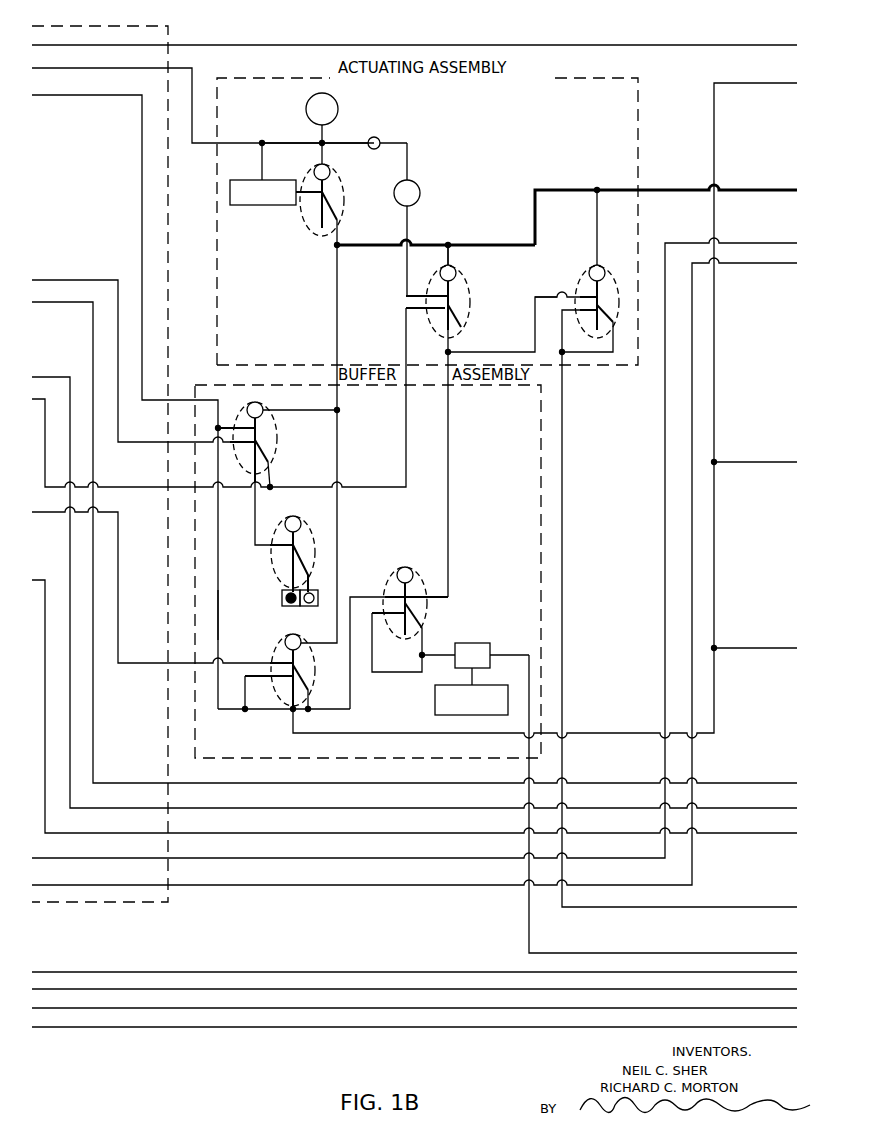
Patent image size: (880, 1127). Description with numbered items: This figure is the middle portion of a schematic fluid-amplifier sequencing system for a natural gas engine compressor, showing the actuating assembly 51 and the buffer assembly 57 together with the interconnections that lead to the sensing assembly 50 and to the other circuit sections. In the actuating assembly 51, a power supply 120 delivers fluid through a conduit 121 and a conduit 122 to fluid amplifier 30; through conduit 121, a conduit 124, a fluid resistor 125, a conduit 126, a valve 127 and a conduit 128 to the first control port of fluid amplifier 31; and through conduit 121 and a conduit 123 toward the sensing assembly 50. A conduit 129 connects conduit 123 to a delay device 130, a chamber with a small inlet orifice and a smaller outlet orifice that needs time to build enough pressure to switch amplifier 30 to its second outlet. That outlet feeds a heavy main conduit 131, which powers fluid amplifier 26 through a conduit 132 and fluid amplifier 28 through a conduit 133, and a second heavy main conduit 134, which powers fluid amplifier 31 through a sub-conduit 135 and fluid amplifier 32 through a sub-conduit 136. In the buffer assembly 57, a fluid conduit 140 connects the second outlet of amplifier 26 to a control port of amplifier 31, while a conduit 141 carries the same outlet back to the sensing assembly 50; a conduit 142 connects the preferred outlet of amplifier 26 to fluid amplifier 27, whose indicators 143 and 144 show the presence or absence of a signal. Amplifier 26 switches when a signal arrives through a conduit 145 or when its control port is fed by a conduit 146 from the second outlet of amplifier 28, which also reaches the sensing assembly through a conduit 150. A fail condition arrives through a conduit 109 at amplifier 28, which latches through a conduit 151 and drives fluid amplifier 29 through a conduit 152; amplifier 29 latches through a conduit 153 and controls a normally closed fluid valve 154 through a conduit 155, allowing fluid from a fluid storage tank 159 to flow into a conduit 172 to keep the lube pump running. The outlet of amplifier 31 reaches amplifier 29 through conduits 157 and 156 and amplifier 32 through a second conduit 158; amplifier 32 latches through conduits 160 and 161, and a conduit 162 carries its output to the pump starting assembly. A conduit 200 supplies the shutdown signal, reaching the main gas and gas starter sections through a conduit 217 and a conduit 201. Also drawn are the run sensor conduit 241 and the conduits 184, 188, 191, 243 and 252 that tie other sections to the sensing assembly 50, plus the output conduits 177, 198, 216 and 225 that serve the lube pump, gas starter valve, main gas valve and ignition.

The sensing assembly 50 is at (168, 30).
The actuating assembly 51 is at (625, 78).
The buffer assembly 57 is at (207, 385).
The conduit 241 is at (402, 45).
The conduit 123 is at (192, 71).
The fluid resistor 125 is at (377, 140).
The power supply 120 is at (339, 99).
The conduit 121 is at (324, 140).
The conduit 122 is at (320, 147).
The conduit 124 is at (331, 151).
The conduit 129 is at (262, 168).
The delay device 130 is at (275, 206).
The fluid amplifier 30 is at (334, 166).
The conduit 126 is at (407, 164).
The valve 127 is at (420, 191).
The conduit 128 is at (407, 218).
The main conduit 134 is at (384, 248).
The sub-conduit 136 is at (597, 212).
The conduit 150 is at (142, 176).
The conduit 145 is at (40, 280).
The conduit 184 is at (393, 783).
The conduit 188 is at (38, 377).
The conduit 141 is at (124, 487).
The fluid conduit 140 is at (363, 487).
The conduit 109 is at (118, 618).
The conduit 191 is at (393, 833).
The fluid conduit 243 is at (400, 858).
The conduit 252 is at (402, 885).
The conduit 177 is at (402, 972).
The conduit 198 is at (402, 989).
The conduit 216 is at (402, 1008).
The conduit 225 is at (402, 1027).
The conduit 172 is at (697, 953).
The conduit 162 is at (564, 472).
The conduit 200 is at (716, 600).
The conduit 217 is at (778, 462).
The conduit 201 is at (752, 650).
The fluid amplifier 31 is at (442, 265).
The sub-conduit 135 is at (452, 252).
The conduit 157 is at (450, 338).
The conduit 156 is at (452, 472).
The second conduit 158 is at (530, 321).
The conduit 161 is at (553, 297).
The fluid amplifier 32 is at (601, 264).
The conduit 160 is at (570, 352).
The main conduit 131 is at (337, 328).
The conduit 133 is at (338, 530).
The conduit 132 is at (325, 411).
The fluid amplifier 26 is at (262, 405).
The conduit 142 is at (259, 510).
The fluid amplifier 27 is at (298, 515).
The indicator 143 is at (288, 608).
The indicator 144 is at (309, 608).
The conduit 146 is at (218, 604).
The fluid amplifier 28 is at (283, 637).
The conduit 151 is at (255, 680).
The conduit 152 is at (351, 676).
The fluid amplifier 29 is at (400, 568).
The conduit 153 is at (375, 662).
The conduit 155 is at (428, 652).
The normally closed fluid valve 154 is at (480, 643).
The fluid storage tank 159 is at (438, 695).